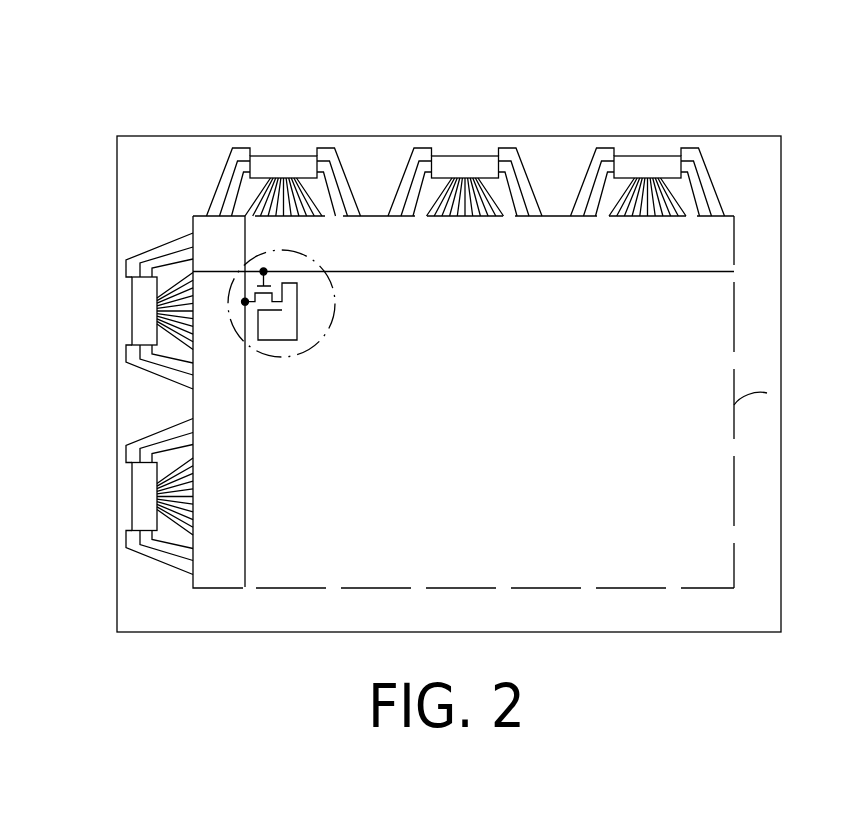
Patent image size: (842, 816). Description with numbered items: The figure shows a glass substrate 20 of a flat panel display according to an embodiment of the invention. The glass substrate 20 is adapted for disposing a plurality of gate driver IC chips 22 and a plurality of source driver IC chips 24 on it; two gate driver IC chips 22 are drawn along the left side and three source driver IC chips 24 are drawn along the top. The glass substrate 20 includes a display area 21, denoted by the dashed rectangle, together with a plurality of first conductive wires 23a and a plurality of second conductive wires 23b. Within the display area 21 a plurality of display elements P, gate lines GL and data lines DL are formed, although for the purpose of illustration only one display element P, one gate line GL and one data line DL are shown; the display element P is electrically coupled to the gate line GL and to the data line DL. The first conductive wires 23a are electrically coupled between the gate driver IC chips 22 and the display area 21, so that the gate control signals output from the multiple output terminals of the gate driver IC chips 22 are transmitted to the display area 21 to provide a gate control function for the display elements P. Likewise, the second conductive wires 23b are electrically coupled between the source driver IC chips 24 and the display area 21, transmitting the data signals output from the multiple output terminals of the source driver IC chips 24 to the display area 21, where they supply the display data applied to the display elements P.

The glass substrate 20 is at (488, 49).
The display area 21 is at (781, 405).
The gate driver IC chip 22 is at (132, 307).
The first conductive wire 23a is at (163, 247).
The second conductive wire 23b is at (218, 186).
The source driver IC chip 24 is at (280, 156).
The gate line GL is at (463, 292).
The data line DL is at (266, 401).
The display element P is at (330, 328).